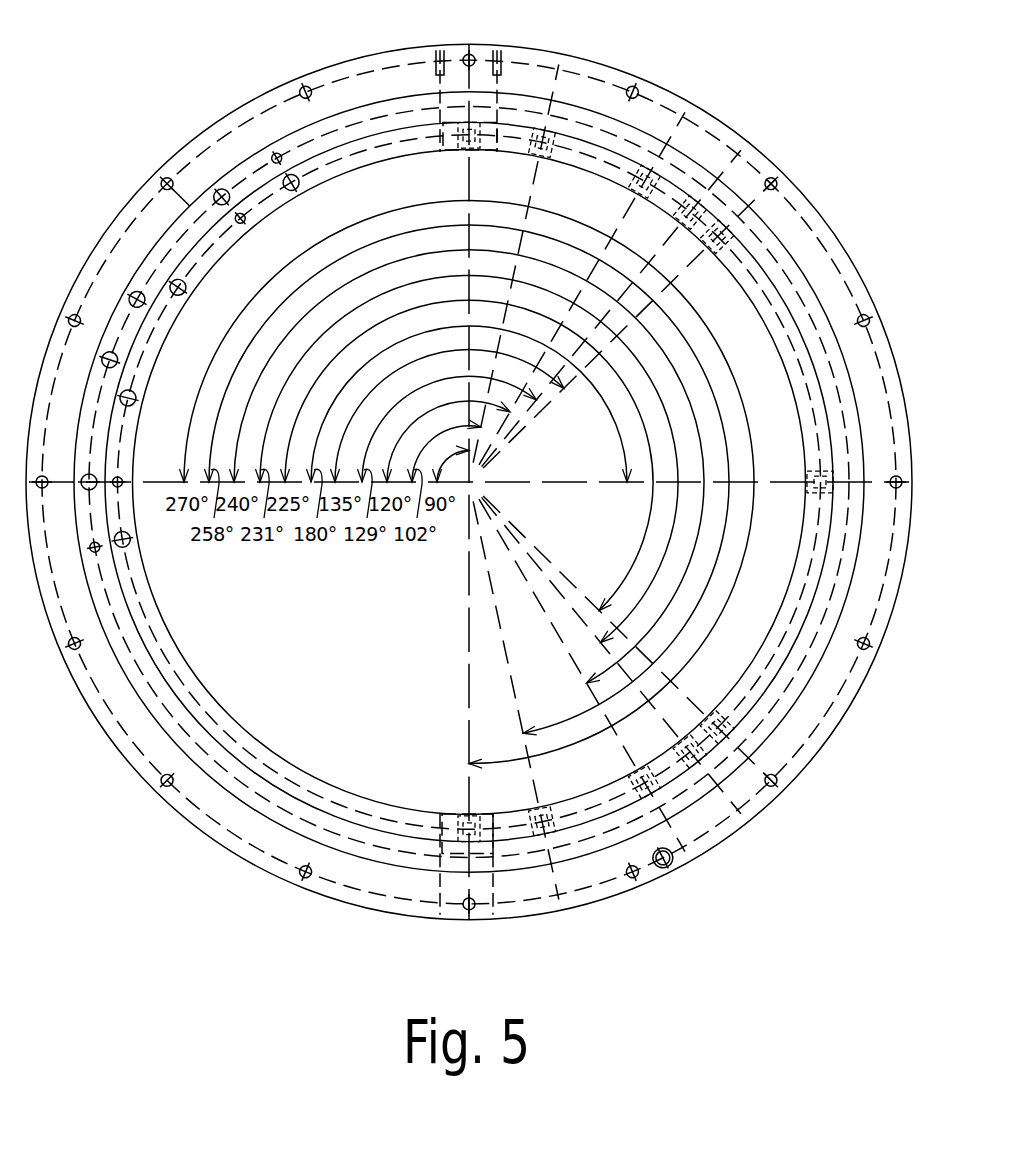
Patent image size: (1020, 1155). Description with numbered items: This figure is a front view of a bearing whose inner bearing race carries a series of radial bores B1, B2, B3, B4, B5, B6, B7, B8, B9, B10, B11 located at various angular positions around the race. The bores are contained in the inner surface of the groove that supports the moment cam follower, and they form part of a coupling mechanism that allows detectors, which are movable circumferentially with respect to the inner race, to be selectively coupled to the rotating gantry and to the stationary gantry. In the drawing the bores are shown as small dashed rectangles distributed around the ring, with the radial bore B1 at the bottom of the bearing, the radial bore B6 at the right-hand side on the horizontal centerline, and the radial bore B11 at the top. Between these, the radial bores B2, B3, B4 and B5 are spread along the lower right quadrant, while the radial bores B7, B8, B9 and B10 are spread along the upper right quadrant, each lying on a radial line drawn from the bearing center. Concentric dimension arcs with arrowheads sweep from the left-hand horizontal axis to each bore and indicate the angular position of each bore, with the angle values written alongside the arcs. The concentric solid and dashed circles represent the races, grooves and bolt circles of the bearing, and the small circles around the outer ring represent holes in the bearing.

The radial bore B1 is at (465, 815).
The radial bore B2 is at (545, 810).
The radial bore B3 is at (638, 782).
The radial bore B4 is at (688, 748).
The radial bore B5 is at (713, 714).
The radial bore B6 is at (818, 472).
The radial bore B7 is at (714, 248).
The radial bore B8 is at (685, 222).
The radial bore B9 is at (645, 186).
The radial bore B10 is at (545, 152).
The radial bore B11 is at (466, 150).